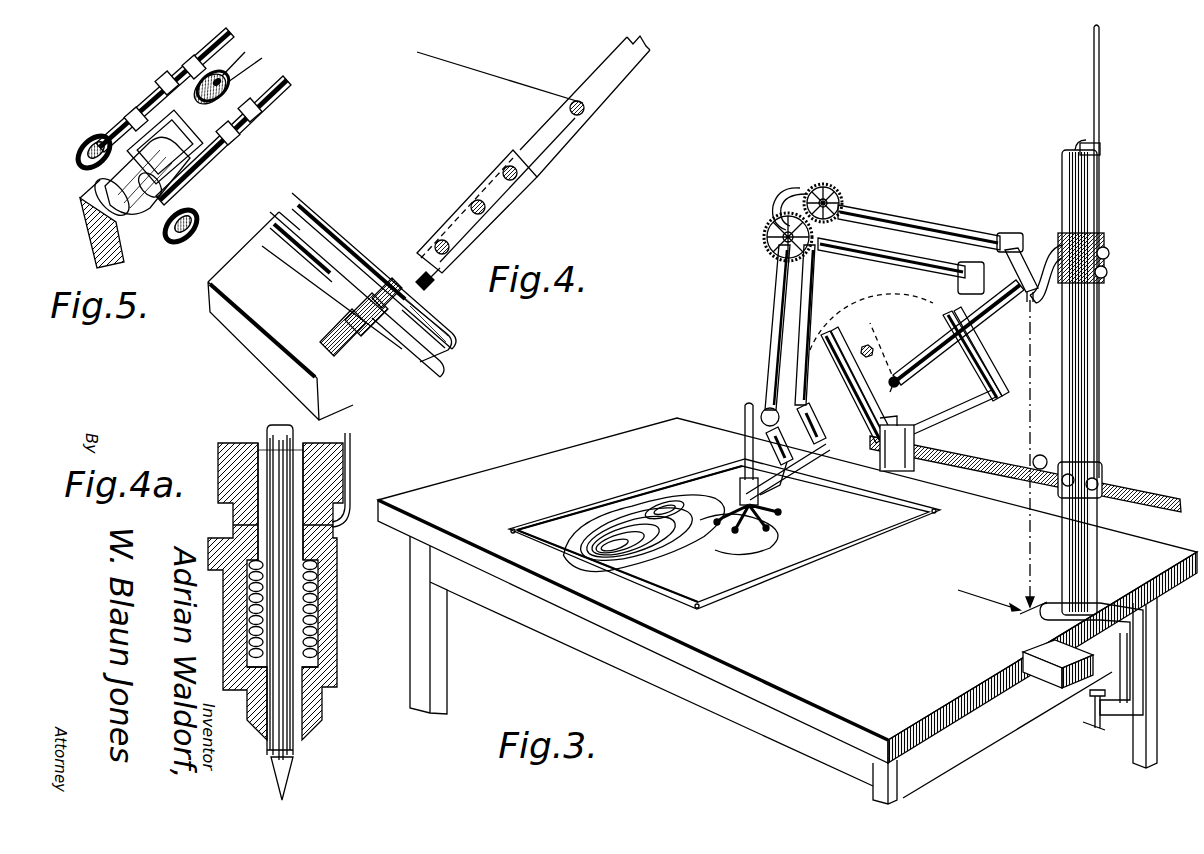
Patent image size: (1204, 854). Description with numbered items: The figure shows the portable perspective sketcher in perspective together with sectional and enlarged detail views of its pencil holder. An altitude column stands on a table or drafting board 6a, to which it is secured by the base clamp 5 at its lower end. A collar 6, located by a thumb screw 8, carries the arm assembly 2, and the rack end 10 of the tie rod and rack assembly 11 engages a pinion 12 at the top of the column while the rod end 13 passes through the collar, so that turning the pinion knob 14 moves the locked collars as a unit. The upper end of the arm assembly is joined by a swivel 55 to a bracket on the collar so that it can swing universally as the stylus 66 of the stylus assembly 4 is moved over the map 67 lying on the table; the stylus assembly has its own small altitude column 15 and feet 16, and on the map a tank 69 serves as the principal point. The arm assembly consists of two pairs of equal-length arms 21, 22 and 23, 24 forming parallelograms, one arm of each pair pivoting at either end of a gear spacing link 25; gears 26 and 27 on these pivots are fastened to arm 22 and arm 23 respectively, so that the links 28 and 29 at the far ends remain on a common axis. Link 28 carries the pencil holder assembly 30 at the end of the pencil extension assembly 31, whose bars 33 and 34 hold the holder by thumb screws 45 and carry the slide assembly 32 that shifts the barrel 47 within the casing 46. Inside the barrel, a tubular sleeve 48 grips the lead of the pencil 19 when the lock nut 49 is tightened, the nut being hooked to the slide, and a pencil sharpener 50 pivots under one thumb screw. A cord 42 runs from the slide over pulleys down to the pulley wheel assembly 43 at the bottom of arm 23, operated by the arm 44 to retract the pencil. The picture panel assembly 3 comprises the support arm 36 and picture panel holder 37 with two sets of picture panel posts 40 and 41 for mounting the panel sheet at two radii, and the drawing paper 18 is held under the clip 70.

In FIG. 3, the arm assembly 2 is at (820, 268).
In FIG. 3, the picture panel assembly 3 is at (956, 448).
In FIG. 3, the stylus assembly 4 is at (766, 477).
In FIG. 3, the base clamp 5 is at (1143, 660).
In FIG. 3, the collar 6 is at (1055, 244).
In FIG. 3, the table or drafting board 6a is at (1140, 556).
In FIG. 3, the thumb screw 8 is at (1110, 256).
In FIG. 3, the rack end 10 is at (1101, 90).
In FIG. 3, the tie rod and rack assembly 11 is at (1103, 252).
In FIG. 3, the pinion 12 is at (1103, 152).
In FIG. 3, the rod end 13 is at (1100, 345).
In FIG. 3, the pinion knob 14 is at (1083, 145).
In FIG. 3, the small altitude column 15 is at (740, 446).
In FIG. 3, the feet 16 is at (737, 508).
In FIG. 3, the drawing paper 18 is at (862, 349).
In FIG. 4A, the pencil 19 is at (288, 776).
In FIG. 3, the pencil 19 is at (900, 388).
In FIG. 3, the arm 21 is at (905, 272).
In FIG. 3, the arm 22 is at (925, 230).
In FIG. 3, the arm 23 is at (775, 306).
In FIG. 3, the arm 24 is at (812, 306).
In FIG. 3, the gear spacing link 25 is at (792, 196).
In FIG. 3, the gear 26 is at (835, 190).
In FIG. 3, the gear 27 is at (768, 250).
In FIG. 4, the link 28 is at (603, 92).
In FIG. 3, the link 28 is at (990, 313).
In FIG. 3, the link 29 is at (780, 465).
In FIG. 5, the pencil holder assembly 30 is at (132, 220).
In FIG. 4, the pencil extension assembly 31 is at (416, 240).
In FIG. 3, the pencil extension assembly 31 is at (926, 345).
In FIG. 5, the slide assembly 32 is at (180, 84).
In FIG. 4A, the slide assembly 32 is at (352, 478).
In FIG. 5, the extension bar 33 is at (284, 106).
In FIG. 5, the extension bar 34 is at (212, 42).
In FIG. 3, the support arm 36 is at (1035, 468).
In FIG. 4, the picture panel holder 37 is at (248, 338).
In FIG. 4, the picture panel posts 40 is at (283, 208).
In FIG. 3, the picture panel posts 40 is at (840, 427).
In FIG. 4, the picture panel posts 41 is at (333, 216).
In FIG. 3, the picture panel posts 41 is at (866, 397).
In FIG. 5, the cord 42 is at (262, 62).
In FIG. 4, the cord 42 is at (490, 72).
In FIG. 3, the cord 42 is at (768, 346).
In FIG. 3, the pulley wheel assembly 43 is at (738, 412).
In FIG. 3, the arm 44 is at (764, 410).
In FIG. 5, the thumb screws 45 is at (100, 136).
In FIG. 5, the casing 46 is at (95, 198).
In FIG. 4, the casing 46 is at (392, 370).
In FIG. 4A, the casing 46 is at (337, 613).
In FIG. 5, the barrel 47 is at (162, 112).
In FIG. 4, the barrel 47 is at (366, 392).
In FIG. 4A, the barrel 47 is at (325, 716).
In FIG. 4, the tubular sleeve 48 is at (312, 366).
In FIG. 4A, the tubular sleeve 48 is at (248, 718).
In FIG. 5, the lock nut 49 is at (240, 66).
In FIG. 4, the lock nut 49 is at (392, 268).
In FIG. 4A, the lock nut 49 is at (330, 460).
In FIG. 5, the pencil sharpener 50 is at (90, 228).
In FIG. 3, the swivel 55 is at (1033, 300).
In FIG. 3, the stylus 66 is at (748, 540).
In FIG. 3, the map 67 is at (598, 520).
In FIG. 3, the tank 69 is at (752, 532).
In FIG. 3, the clip 70 is at (872, 322).